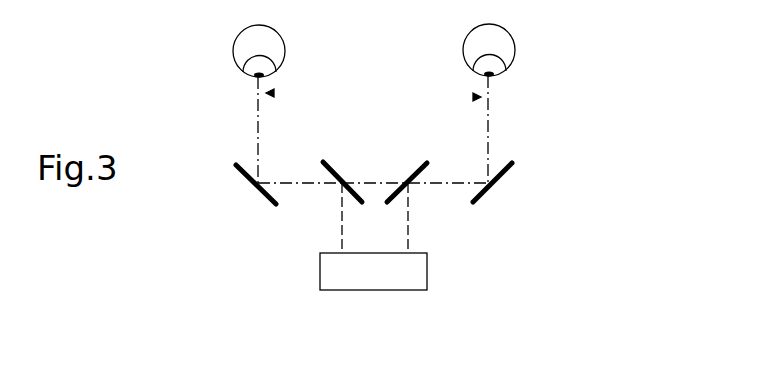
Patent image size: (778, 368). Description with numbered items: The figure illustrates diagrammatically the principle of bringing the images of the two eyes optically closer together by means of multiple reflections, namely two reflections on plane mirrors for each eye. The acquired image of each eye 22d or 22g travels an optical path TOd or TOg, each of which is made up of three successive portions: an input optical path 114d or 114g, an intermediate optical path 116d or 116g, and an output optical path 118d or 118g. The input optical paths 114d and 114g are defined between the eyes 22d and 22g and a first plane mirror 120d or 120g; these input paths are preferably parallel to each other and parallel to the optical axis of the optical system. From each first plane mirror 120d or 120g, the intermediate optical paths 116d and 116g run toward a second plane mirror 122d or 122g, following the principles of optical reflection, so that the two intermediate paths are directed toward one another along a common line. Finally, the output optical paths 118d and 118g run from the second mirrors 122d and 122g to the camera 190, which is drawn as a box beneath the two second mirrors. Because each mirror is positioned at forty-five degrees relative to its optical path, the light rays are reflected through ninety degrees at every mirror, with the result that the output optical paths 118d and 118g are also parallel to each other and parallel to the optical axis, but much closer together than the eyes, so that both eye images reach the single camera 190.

The eye 22d is at (240, 35).
The eye 22g is at (508, 35).
The optical path TOd is at (268, 93).
The optical path TOg is at (478, 97).
The input optical path 114d is at (258, 137).
The input optical path 114g is at (490, 133).
The intermediate optical path 116d is at (303, 185).
The intermediate optical path 116g is at (442, 187).
The output optical path 118d is at (337, 218).
The output optical path 118g is at (408, 220).
The first plane mirror 120d is at (233, 187).
The first plane mirror 120g is at (508, 185).
The second plane mirror 122d is at (340, 174).
The second plane mirror 122g is at (393, 178).
The camera 190 is at (367, 280).